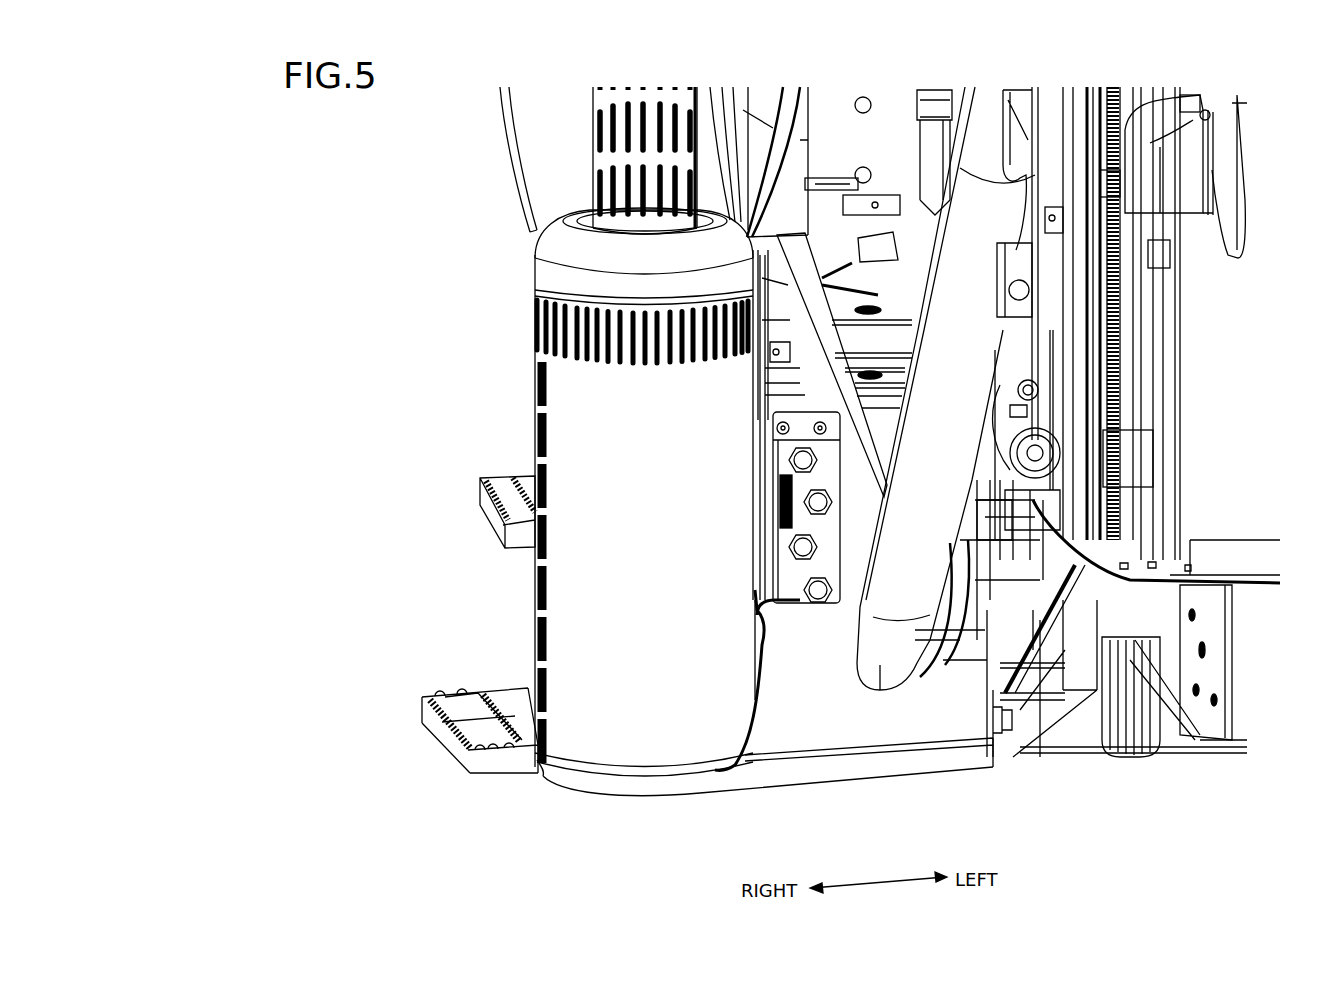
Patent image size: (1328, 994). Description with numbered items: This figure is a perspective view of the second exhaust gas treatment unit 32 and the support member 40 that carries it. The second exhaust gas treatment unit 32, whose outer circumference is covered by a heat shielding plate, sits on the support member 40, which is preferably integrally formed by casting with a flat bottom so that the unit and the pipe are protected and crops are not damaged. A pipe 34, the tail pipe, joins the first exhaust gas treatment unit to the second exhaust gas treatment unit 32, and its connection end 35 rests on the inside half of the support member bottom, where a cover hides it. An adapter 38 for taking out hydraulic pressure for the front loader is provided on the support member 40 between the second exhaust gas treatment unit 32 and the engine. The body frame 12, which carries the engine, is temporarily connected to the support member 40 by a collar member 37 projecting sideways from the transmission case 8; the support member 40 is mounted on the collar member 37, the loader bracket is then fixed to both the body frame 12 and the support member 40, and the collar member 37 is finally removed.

The transmission case 8 is at (1072, 565).
The body frame 12 is at (1207, 695).
The second exhaust gas treatment unit 32 is at (535, 605).
The pipe 34 is at (930, 660).
The connection end 35 is at (885, 672).
The collar member 37 is at (1033, 640).
The adapter 38 is at (821, 604).
The support member 40 is at (625, 808).